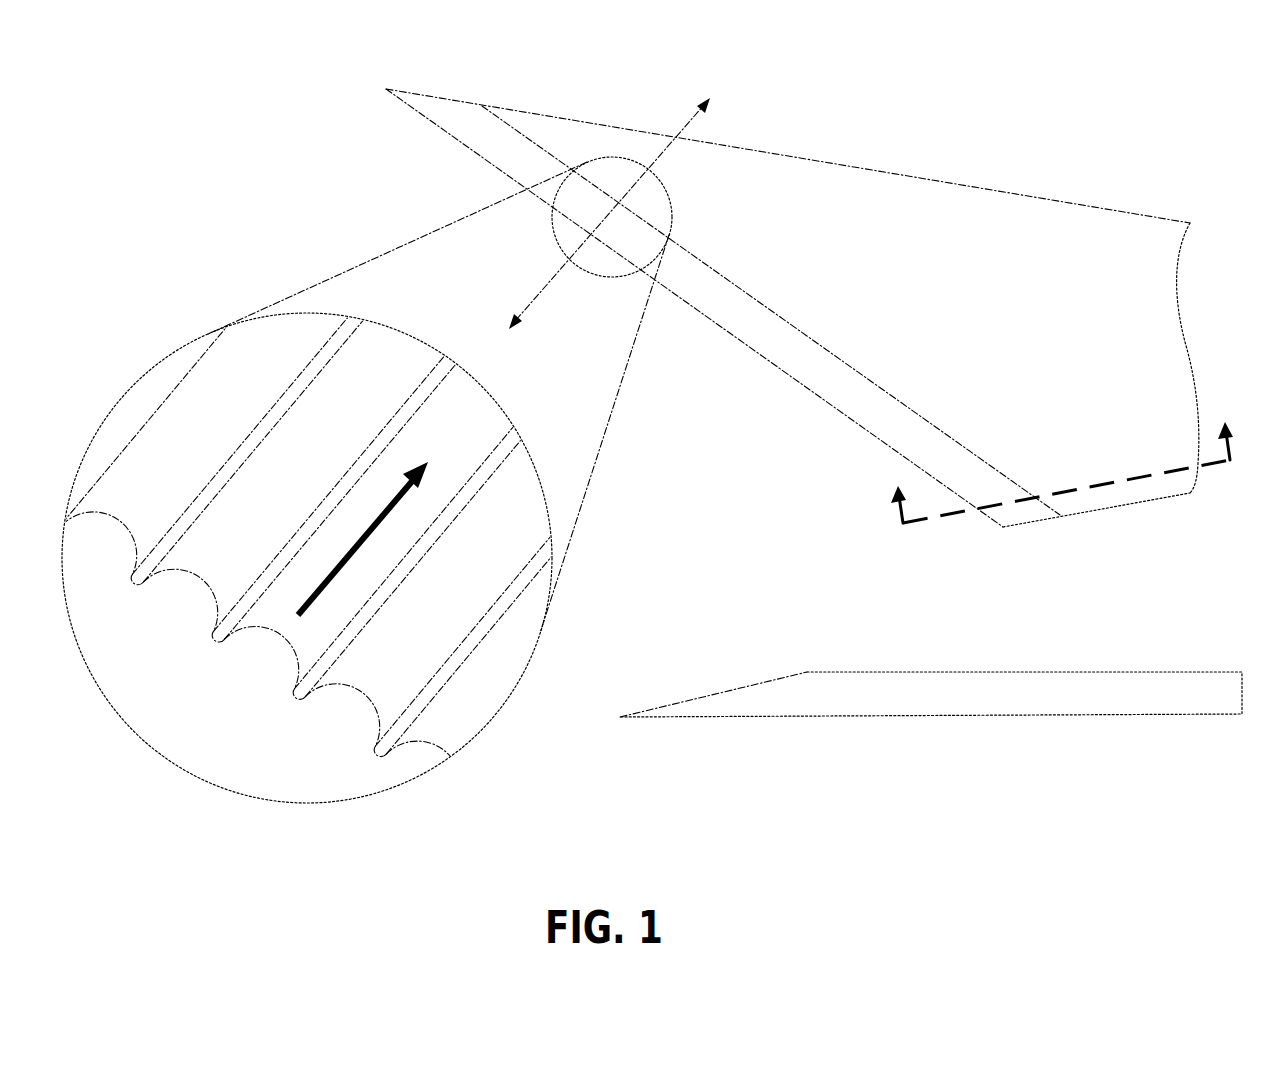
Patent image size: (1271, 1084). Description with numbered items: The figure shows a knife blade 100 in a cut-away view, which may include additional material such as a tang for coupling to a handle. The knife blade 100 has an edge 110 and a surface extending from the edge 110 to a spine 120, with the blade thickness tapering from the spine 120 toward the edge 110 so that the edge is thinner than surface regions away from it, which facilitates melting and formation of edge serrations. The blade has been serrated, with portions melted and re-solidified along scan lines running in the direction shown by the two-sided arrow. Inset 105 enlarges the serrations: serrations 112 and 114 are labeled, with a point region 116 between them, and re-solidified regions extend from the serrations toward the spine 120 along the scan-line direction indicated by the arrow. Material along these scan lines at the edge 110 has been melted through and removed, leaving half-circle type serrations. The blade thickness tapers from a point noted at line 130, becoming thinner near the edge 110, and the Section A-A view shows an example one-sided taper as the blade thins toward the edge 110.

The knife blade 100 is at (1122, 93).
The inset 105 is at (131, 390).
The edge 110 is at (765, 364).
The serration 112 is at (187, 569).
The serration 114 is at (290, 627).
The point region 116 is at (218, 636).
The spine 120 is at (1087, 214).
The line 130 is at (853, 370).